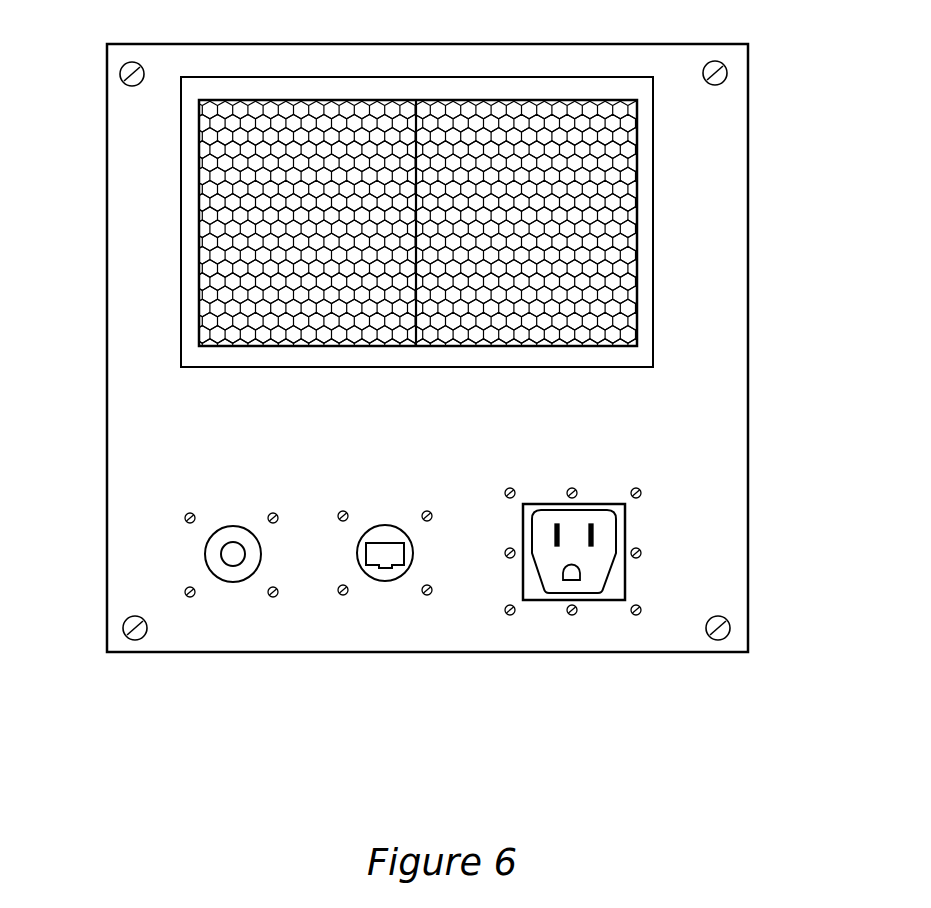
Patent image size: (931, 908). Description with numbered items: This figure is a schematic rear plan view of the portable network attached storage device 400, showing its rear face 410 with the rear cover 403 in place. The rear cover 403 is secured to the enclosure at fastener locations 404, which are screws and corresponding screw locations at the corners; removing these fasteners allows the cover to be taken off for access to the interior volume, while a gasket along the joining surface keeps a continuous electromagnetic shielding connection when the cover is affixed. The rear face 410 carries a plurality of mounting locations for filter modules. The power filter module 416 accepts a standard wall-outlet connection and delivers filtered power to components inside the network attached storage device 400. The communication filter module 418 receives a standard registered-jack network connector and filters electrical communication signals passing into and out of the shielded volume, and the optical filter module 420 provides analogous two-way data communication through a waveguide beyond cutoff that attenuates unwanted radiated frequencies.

The network attached storage device 400 is at (107, 710).
The rear cover 403 is at (300, 668).
The fastener locations 404 is at (126, 72).
The rear face 410 is at (433, 428).
The power filter module 416 is at (498, 592).
The communication filter module 418 is at (333, 588).
The optical filter module 420 is at (201, 510).